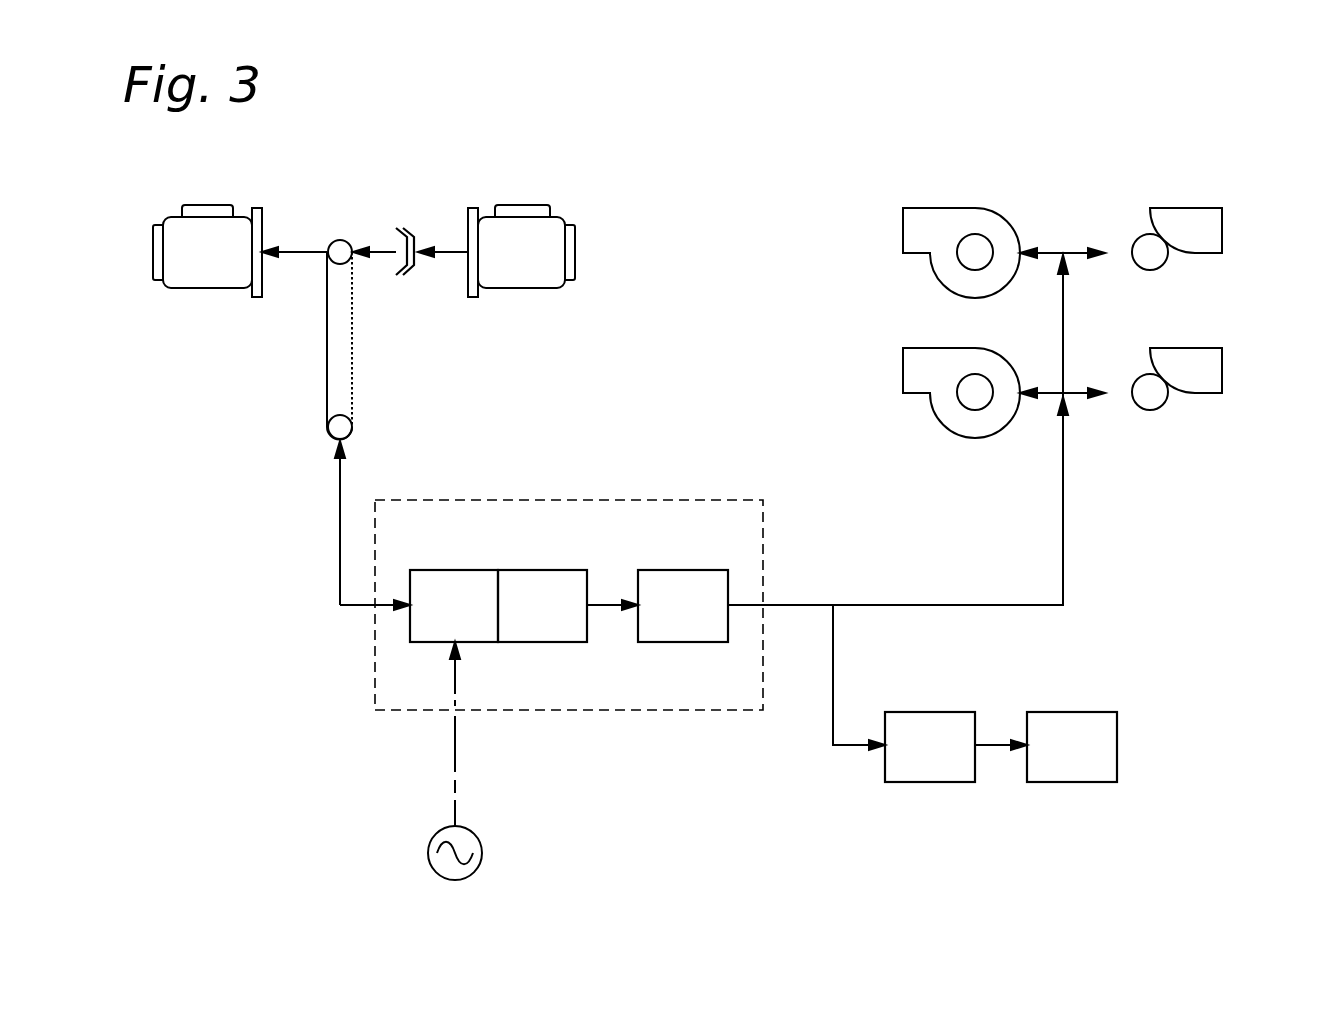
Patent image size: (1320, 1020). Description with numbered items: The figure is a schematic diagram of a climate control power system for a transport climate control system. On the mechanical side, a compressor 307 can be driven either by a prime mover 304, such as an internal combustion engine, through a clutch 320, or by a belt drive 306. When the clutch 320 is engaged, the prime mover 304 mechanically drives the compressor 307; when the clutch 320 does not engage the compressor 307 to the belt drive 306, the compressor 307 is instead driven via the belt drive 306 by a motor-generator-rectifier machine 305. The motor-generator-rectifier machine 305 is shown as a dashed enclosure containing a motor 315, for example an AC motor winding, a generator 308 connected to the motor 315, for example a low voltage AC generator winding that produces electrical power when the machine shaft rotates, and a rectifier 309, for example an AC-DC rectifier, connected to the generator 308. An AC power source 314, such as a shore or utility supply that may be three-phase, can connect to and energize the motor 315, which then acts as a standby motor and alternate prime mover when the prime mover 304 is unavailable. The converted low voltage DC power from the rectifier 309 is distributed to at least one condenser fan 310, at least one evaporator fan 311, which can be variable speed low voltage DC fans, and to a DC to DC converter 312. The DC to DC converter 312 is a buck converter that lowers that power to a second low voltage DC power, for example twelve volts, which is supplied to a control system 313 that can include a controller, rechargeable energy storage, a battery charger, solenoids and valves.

The prime mover 304 is at (499, 266).
The motor-generator-rectifier machine 305 is at (630, 500).
The belt drive 306 is at (327, 393).
The compressor 307 is at (186, 266).
The generator 308 is at (521, 620).
The rectifier 309 is at (662, 620).
The condenser fan 310 is at (922, 348).
The evaporator fan 311 is at (922, 208).
The DC to DC converter 312 is at (909, 760).
The control system 313 is at (1051, 760).
The AC power source 314 is at (437, 833).
The motor 315 is at (433, 620).
The clutch 320 is at (415, 228).